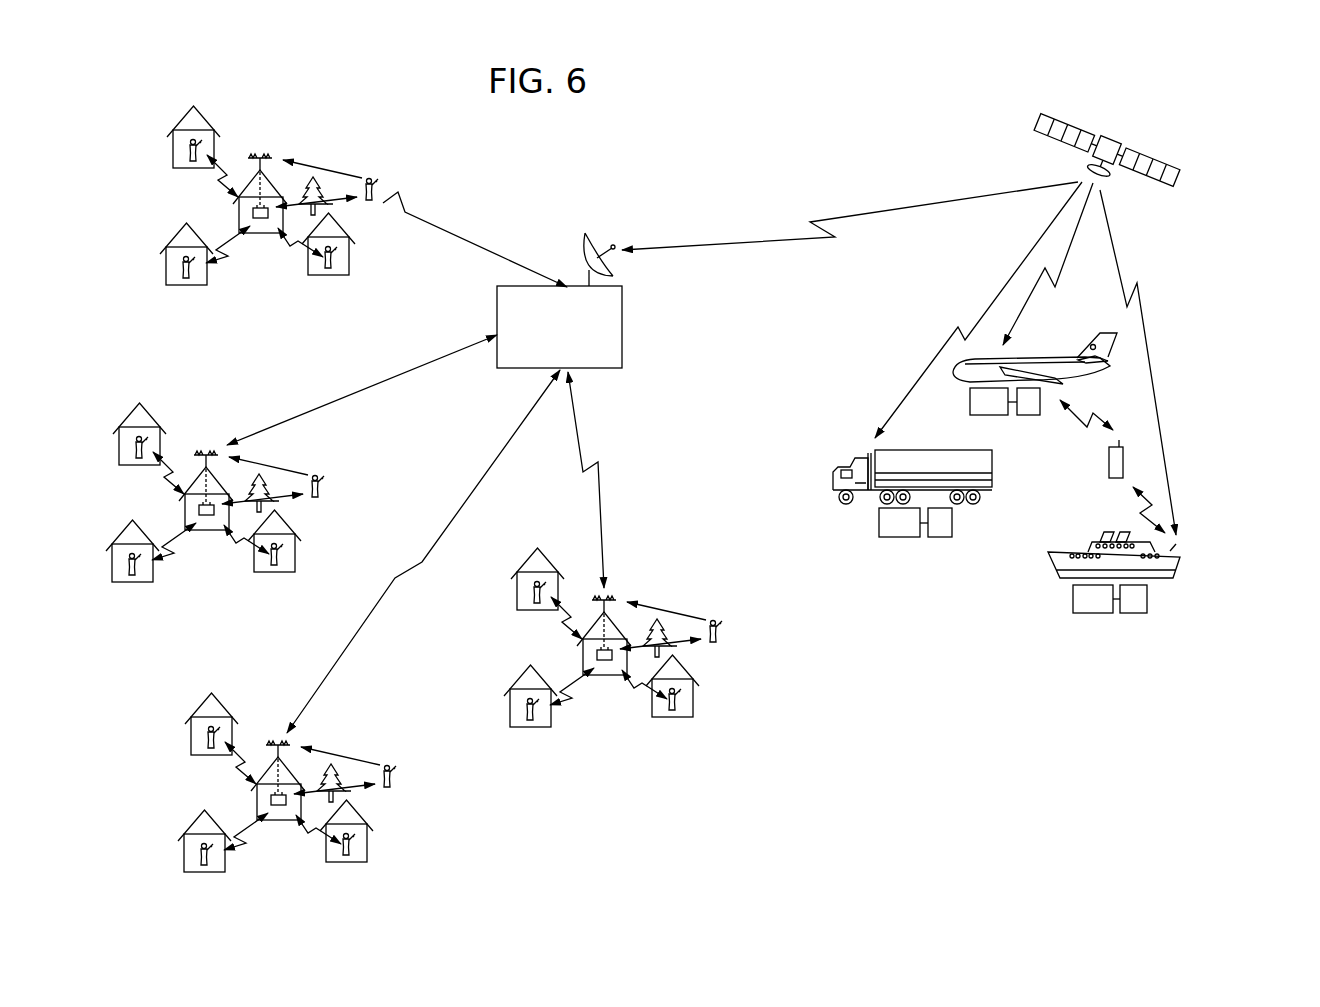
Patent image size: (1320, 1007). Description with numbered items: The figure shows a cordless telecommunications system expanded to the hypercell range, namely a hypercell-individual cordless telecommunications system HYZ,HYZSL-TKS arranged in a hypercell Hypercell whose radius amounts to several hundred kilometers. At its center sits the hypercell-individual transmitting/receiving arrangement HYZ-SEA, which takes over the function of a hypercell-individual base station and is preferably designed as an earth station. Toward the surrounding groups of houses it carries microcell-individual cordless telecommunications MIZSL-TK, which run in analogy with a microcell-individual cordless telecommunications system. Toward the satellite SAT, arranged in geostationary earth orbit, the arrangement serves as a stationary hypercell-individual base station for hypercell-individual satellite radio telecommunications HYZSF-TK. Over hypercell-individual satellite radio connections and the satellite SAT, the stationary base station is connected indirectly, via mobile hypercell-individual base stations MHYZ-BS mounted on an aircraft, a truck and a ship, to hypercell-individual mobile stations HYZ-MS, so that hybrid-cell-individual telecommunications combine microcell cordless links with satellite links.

The satellite SAT is at (1147, 133).
The hypercell-individual satellite radio telecommunications HYZSF-TK is at (678, 245).
The hypercell Hypercell is at (623, 317).
The hypercell-individual transmitting/receiving arrangement HYZ-SEA is at (623, 333).
The microcell-individual cordless telecommunications MIZSL-TK is at (468, 472).
The hypercell-individual cordless telecommunications system HYZ,HYZSL-TKS is at (680, 487).
The mobile hypercell-individual base station MHYZ-BS is at (970, 402).
The hypercell-individual mobile station HYZ-MS is at (1028, 415).